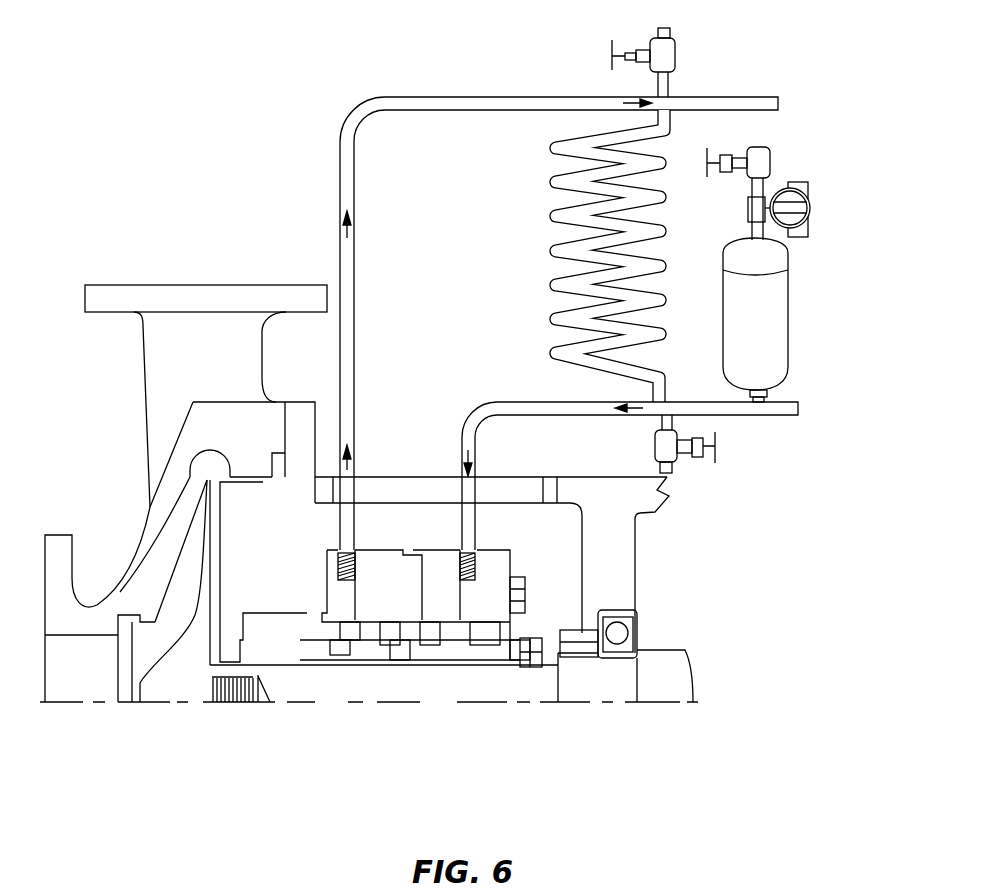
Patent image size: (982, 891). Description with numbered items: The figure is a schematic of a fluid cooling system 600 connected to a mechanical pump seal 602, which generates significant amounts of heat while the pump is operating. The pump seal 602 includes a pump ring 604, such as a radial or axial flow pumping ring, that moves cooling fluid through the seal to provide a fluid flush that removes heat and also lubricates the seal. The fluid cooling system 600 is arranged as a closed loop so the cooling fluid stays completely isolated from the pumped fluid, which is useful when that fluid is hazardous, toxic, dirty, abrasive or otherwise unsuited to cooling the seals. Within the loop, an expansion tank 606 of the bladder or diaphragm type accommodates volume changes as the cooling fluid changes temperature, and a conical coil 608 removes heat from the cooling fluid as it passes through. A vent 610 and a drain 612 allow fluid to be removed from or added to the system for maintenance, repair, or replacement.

The fluid cooling system 600 is at (235, 162).
The pump seal 602 is at (468, 607).
The pump ring 604 is at (476, 553).
The expansion tank 606 is at (773, 355).
The conical coil 608 is at (552, 215).
The vent 610 is at (667, 82).
The drain 612 is at (672, 423).